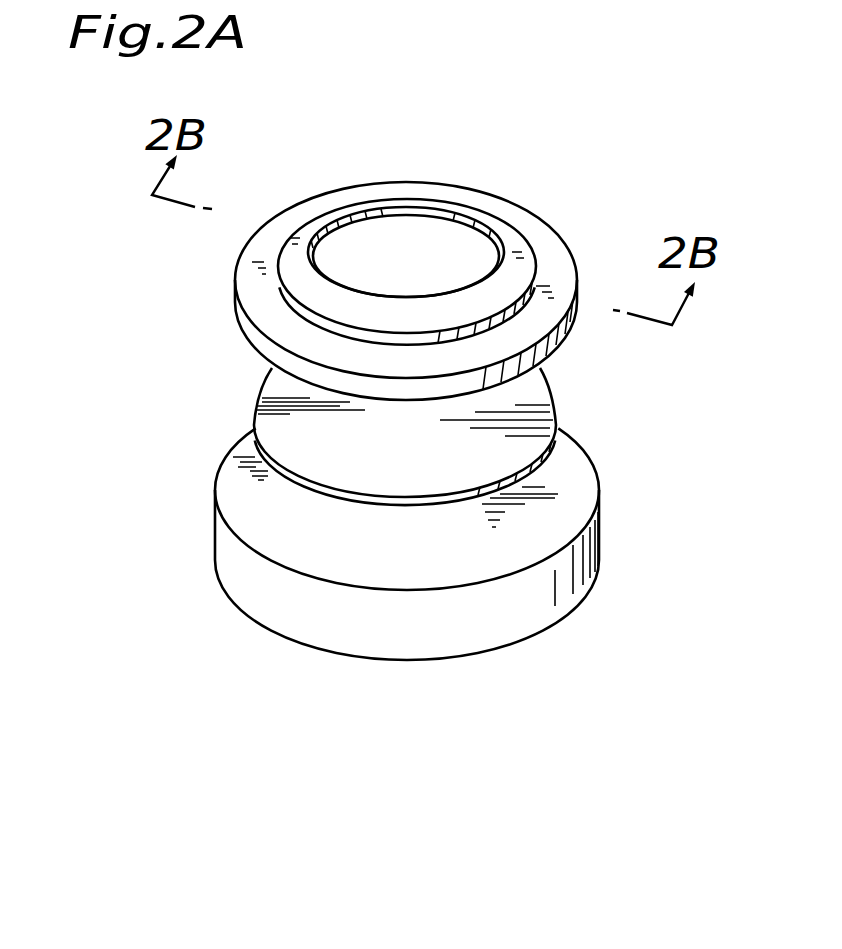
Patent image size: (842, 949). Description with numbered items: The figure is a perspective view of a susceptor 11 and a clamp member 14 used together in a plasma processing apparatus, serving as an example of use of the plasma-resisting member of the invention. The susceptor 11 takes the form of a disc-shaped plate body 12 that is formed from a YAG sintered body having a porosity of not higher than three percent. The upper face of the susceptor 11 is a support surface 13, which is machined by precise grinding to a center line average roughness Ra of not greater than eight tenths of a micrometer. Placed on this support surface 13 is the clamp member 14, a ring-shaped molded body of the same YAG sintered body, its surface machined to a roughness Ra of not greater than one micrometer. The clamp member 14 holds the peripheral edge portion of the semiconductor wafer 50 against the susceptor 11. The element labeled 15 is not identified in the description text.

The susceptor 11 is at (427, 529).
The disc-shaped plate body 12 is at (552, 618).
The support surface 13 is at (232, 499).
The clamp member 14 is at (540, 194).
The raised annular ring 15 is at (254, 296).
The semiconductor wafer 50 is at (267, 381).